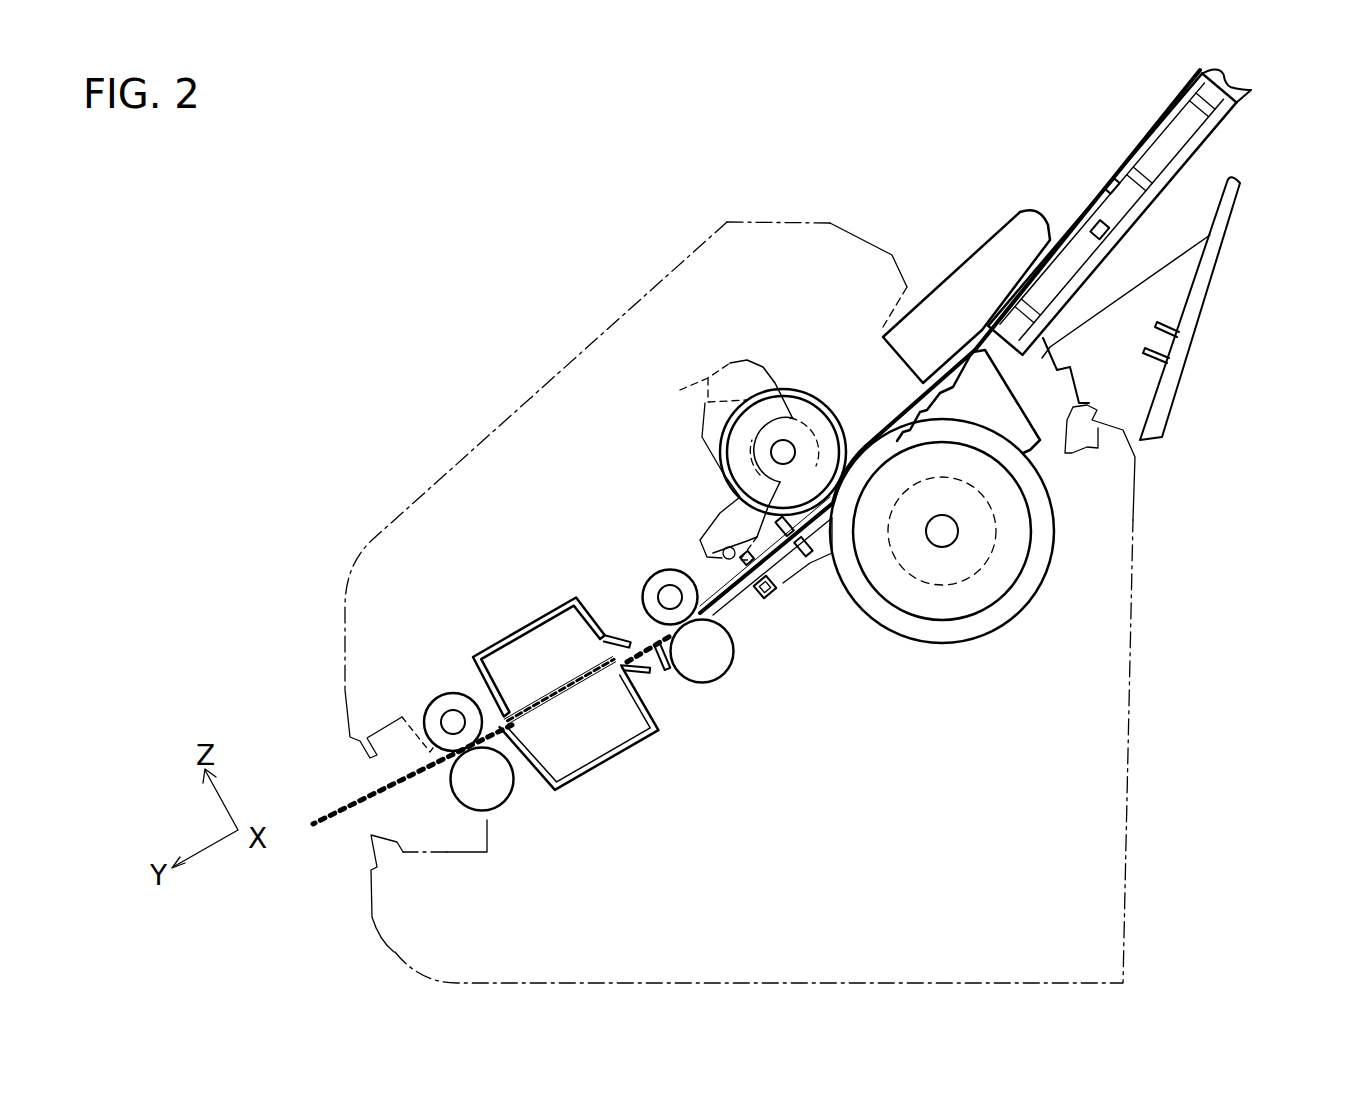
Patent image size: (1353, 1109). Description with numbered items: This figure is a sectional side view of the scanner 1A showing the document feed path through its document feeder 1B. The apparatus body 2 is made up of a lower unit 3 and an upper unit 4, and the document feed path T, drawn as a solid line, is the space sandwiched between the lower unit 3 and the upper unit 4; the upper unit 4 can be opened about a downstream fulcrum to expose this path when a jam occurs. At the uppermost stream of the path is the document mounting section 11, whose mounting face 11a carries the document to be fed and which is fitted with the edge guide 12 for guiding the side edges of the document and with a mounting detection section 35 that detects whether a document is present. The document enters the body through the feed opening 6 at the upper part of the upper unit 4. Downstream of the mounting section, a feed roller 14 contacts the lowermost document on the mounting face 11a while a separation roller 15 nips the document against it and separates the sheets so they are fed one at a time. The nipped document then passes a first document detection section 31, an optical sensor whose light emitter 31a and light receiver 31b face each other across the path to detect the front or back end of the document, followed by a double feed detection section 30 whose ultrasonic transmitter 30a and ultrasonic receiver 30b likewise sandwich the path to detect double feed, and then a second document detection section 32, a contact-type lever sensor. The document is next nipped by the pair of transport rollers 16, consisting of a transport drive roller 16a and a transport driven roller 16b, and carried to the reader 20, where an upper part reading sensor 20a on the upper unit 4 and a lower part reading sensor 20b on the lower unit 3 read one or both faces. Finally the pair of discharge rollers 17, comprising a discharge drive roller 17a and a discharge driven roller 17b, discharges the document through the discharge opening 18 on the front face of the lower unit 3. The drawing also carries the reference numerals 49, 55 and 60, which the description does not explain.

The scanner 1A is at (495, 225).
The document feeder 1B is at (881, 210).
The apparatus body 2 is at (1163, 550).
The lower unit 3 is at (1133, 615).
The upper unit 4 is at (560, 368).
The feed opening 6 is at (862, 385).
The document mounting section 11 is at (1223, 137).
The mounting face 11a is at (1110, 183).
The edge guide 12 is at (977, 227).
The feed roller 14 is at (1010, 637).
The separation roller 15 is at (795, 388).
The pair of transport rollers 16 is at (795, 753).
The transport drive roller 16a is at (712, 652).
The transport driven roller 16b is at (674, 618).
The pair of discharge rollers 17 is at (565, 908).
The discharge drive roller 17a is at (490, 785).
The discharge driven roller 17b is at (449, 742).
The discharge opening 18 is at (384, 770).
The reader 20 is at (572, 590).
The upper part reading sensor 20a is at (540, 652).
The lower part reading sensor 20b is at (598, 742).
The double feed detection section 30 is at (700, 505).
The ultrasonic transmitter 30a is at (723, 553).
The ultrasonic receiver 30b is at (744, 556).
The first document detection section 31 is at (870, 663).
The light emitter 31a is at (805, 557).
The light receiver 31b is at (785, 540).
The second document detection section 32 is at (662, 670).
The mounting detection section 35 is at (1100, 230).
The roller shaft 49 is at (940, 590).
The cover member 55 is at (700, 390).
The pressing member 60 is at (735, 355).
The document feed path T is at (1150, 128).